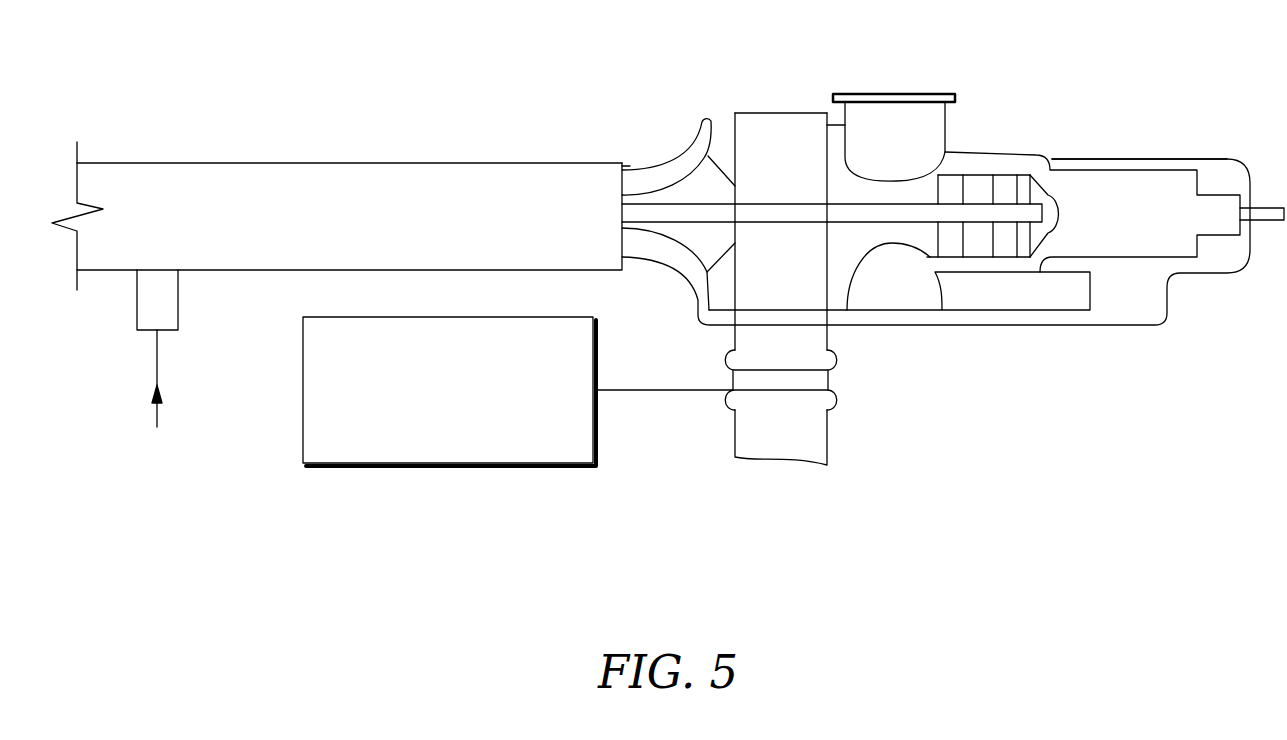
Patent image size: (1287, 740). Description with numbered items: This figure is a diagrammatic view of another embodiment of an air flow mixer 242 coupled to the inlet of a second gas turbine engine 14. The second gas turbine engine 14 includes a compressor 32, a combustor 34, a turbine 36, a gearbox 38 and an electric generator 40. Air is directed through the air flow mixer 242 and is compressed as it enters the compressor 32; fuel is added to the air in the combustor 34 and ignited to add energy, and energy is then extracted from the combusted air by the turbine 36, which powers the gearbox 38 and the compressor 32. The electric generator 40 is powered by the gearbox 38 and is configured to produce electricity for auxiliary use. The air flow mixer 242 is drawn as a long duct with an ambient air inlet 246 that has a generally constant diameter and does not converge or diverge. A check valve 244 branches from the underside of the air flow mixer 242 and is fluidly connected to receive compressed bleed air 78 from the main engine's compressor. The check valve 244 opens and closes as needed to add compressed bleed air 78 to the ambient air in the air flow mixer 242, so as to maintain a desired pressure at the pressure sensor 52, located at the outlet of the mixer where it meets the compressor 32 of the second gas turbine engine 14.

The second gas turbine engine 14 is at (762, 70).
The compressor 32 is at (681, 156).
The combustor 34 is at (1160, 226).
The turbine 36 is at (978, 192).
The gearbox 38 is at (830, 428).
The electric generator 40 is at (432, 434).
The pressure sensor 52 is at (626, 166).
The compressed bleed air 78 is at (157, 427).
The air flow mixer 242 is at (338, 148).
The check valve 244 is at (182, 298).
The ambient air inlet 246 is at (243, 160).